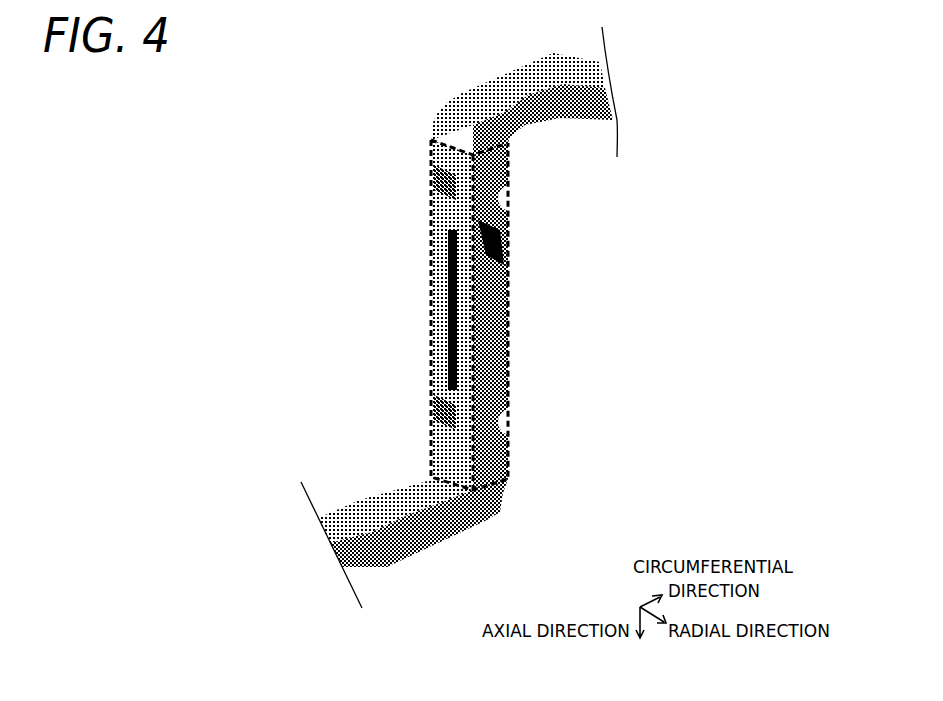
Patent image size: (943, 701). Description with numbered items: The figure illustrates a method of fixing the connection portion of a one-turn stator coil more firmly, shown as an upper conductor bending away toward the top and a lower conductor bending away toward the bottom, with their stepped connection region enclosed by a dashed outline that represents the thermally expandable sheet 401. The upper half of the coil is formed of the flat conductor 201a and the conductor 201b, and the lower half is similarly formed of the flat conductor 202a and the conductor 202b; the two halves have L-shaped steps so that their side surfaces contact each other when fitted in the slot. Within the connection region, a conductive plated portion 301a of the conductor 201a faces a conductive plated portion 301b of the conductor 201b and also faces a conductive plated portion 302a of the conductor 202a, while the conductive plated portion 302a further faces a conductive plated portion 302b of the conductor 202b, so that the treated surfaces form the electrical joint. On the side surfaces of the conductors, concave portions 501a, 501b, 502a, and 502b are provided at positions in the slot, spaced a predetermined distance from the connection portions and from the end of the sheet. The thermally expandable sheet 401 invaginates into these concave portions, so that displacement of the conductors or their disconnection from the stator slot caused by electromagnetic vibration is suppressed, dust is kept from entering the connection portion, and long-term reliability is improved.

The flat conductor 201a is at (470, 92).
The conductor 201b is at (532, 126).
The flat conductor 202a is at (457, 543).
The conductor 202b is at (400, 507).
The conductive plated portion 301a is at (445, 270).
The conductive plated portion 301b is at (500, 275).
The conductive plated portion 302a is at (480, 368).
The conductive plated portion 302b is at (445, 365).
The thermally expandable sheet 401 is at (503, 238).
The concave portion 501a is at (445, 200).
The concave portion 501b is at (500, 218).
The concave portion 502a is at (445, 420).
The concave portion 502b is at (490, 438).